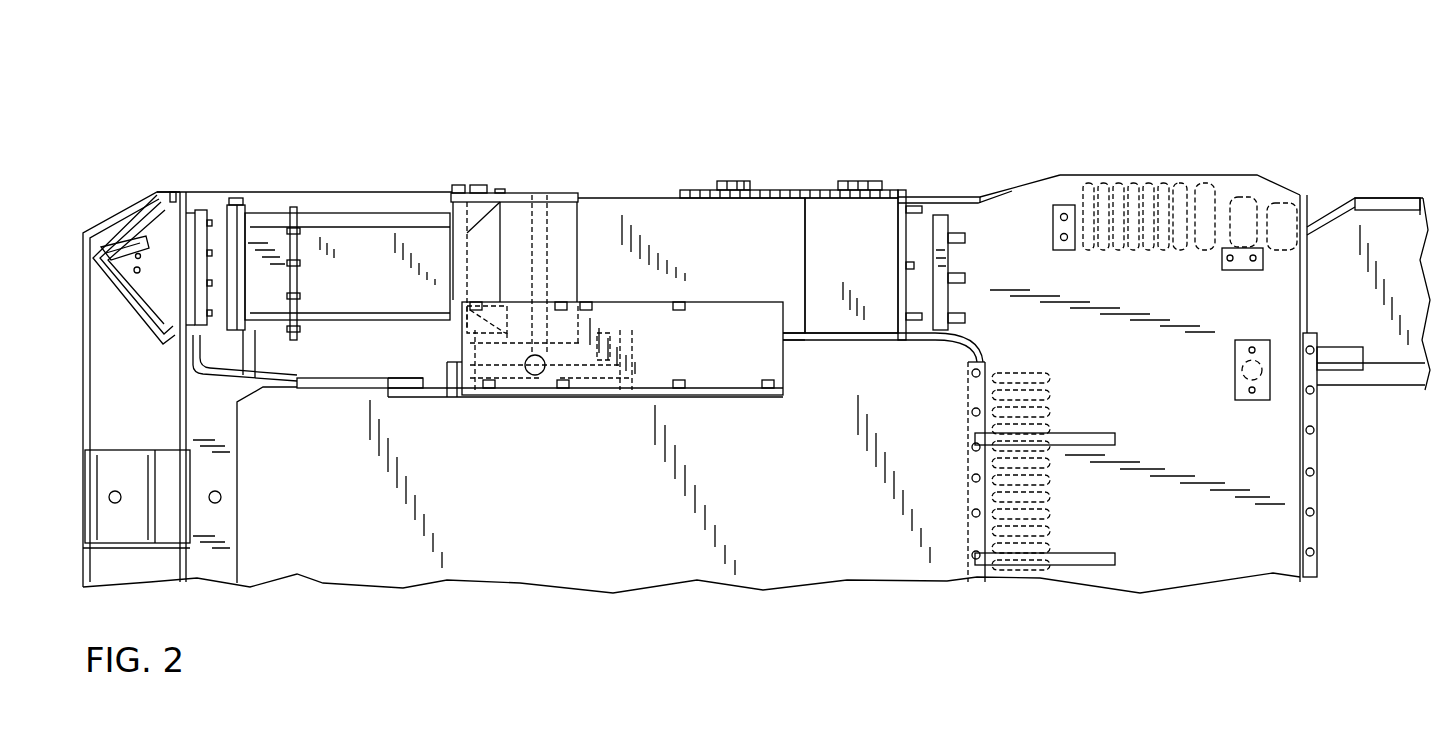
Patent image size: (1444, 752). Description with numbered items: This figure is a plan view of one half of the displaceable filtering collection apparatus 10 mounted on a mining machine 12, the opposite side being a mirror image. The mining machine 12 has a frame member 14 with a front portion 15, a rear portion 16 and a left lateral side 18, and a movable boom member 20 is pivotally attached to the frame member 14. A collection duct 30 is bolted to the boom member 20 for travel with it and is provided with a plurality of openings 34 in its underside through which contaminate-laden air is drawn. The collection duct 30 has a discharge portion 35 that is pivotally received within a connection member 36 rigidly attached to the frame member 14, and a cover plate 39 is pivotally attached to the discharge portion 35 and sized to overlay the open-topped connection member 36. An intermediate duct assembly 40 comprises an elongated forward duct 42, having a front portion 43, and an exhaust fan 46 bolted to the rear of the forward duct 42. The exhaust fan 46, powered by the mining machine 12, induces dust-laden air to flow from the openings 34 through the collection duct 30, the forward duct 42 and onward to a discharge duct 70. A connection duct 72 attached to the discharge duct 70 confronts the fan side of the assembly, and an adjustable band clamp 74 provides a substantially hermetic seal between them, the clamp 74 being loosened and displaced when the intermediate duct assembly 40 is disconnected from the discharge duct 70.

The collection apparatus 10 is at (531, 186).
The mining machine 12 is at (774, 514).
The frame member 14 is at (525, 400).
The front portion 15 is at (1042, 162).
The rear portion 16 is at (118, 202).
The left lateral side 18 is at (378, 193).
The movable boom member 20 is at (1308, 225).
The collection duct 30 is at (1151, 367).
The openings 34 is at (1221, 184).
The discharge portion 35 is at (945, 192).
The connection member 36 is at (852, 348).
The cover plate 39 is at (834, 270).
The intermediate duct assembly 40 is at (588, 191).
The elongated forward duct 42 is at (670, 254).
The front portion 43 is at (790, 193).
The exhaust fan 46 is at (354, 265).
The discharge duct 70 is at (144, 295).
The connection duct 72 is at (217, 220).
The adjustable band clamp 74 is at (242, 206).